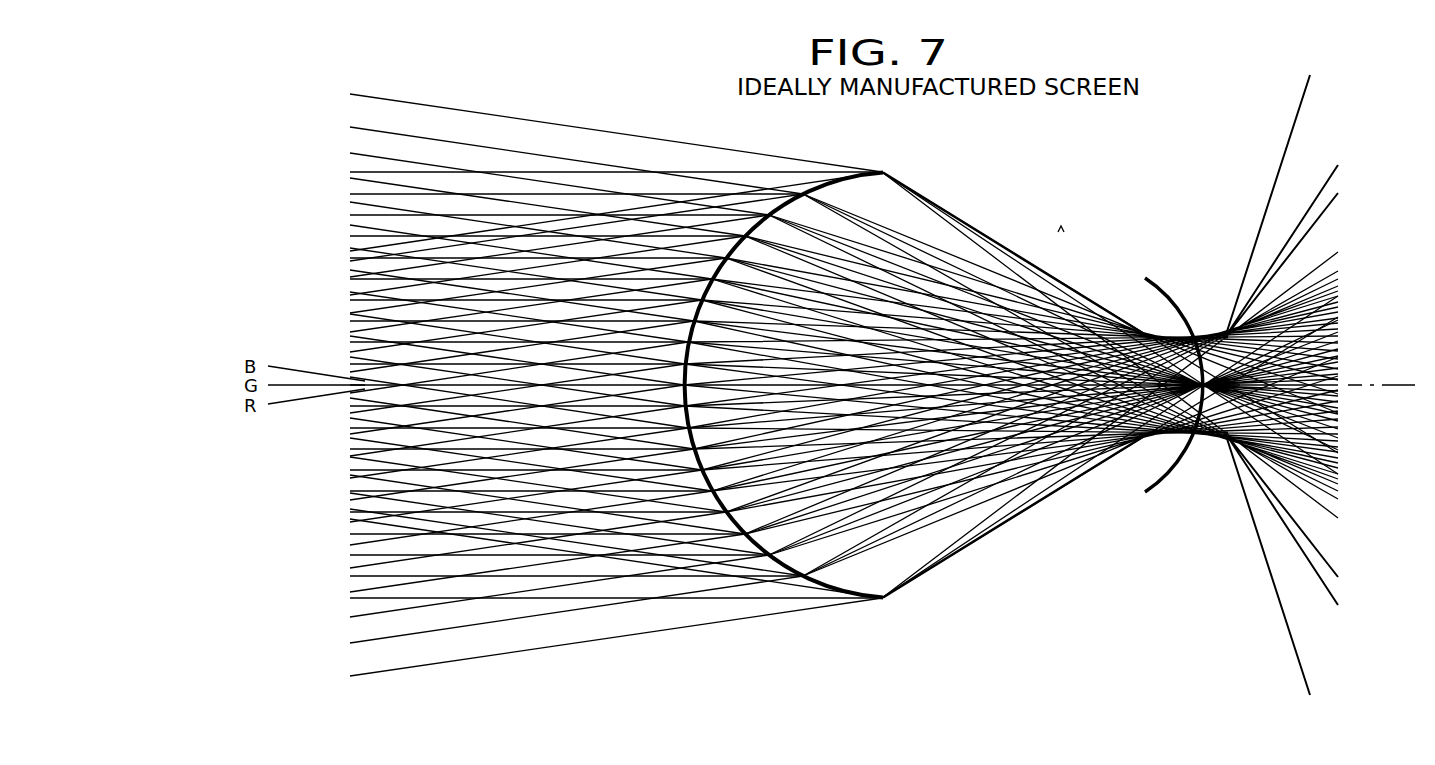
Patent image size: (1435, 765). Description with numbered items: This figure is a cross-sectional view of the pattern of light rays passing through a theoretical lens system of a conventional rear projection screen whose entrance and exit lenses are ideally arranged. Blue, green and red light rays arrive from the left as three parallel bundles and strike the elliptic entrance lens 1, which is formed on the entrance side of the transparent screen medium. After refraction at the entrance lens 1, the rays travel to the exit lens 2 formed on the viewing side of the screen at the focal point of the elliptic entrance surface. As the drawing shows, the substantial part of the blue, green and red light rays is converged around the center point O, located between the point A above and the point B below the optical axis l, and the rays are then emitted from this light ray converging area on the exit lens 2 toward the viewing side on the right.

The elliptic entrance lens 1 is at (849, 168).
The exit lens 2 is at (1165, 294).
The point A is at (1193, 333).
The center point O is at (1180, 337).
The point B is at (1195, 440).
The optical axis l is at (1388, 385).